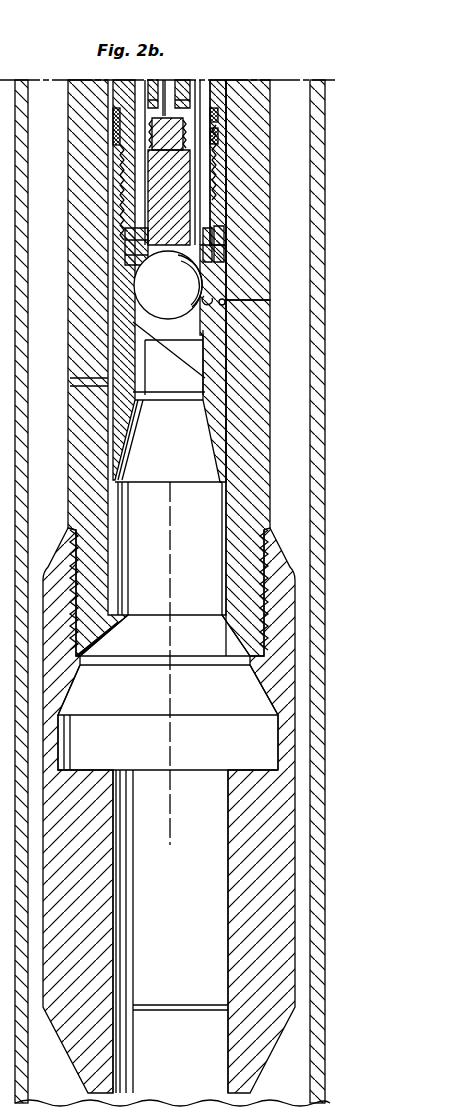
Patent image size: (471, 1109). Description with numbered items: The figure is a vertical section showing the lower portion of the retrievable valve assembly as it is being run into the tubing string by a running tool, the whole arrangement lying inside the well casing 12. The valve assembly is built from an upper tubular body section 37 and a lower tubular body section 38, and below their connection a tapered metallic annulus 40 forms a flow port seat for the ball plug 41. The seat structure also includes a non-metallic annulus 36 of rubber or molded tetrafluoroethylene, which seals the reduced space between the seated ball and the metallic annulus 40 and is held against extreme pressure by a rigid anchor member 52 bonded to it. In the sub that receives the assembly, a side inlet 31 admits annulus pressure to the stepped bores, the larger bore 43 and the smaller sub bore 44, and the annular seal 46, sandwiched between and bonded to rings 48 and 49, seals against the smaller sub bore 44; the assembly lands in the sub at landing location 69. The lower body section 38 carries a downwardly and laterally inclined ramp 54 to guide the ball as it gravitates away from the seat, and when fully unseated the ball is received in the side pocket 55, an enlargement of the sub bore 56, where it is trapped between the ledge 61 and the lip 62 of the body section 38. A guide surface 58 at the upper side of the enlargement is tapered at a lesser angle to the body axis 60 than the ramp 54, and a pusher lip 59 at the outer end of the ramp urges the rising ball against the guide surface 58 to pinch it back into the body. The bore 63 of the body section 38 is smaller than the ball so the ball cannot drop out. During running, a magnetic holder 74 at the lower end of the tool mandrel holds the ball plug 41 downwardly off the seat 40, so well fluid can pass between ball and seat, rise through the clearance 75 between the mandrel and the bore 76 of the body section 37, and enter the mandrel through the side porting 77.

The well casing 12 is at (309, 1023).
The side inlet 31 is at (226, 382).
The non-metallic annulus 36 is at (125, 238).
The upper tubular body section 37 is at (228, 200).
The lower tubular body section 38 is at (120, 303).
The metallic annulus 40 is at (207, 233).
The ball plug 41 is at (168, 285).
The larger stepped bore 43 is at (225, 302).
The smaller sub bore 44 is at (223, 497).
The annular seal 46 is at (226, 127).
The ring 48 is at (220, 120).
The ring 49 is at (222, 144).
The rigid anchor member 52 is at (230, 253).
The ramp 54 is at (203, 341).
The side pocket 55 is at (275, 734).
The sub bore 56 is at (228, 905).
The guide surface 58 is at (248, 675).
The pusher lip 59 is at (213, 368).
The body axis 60 is at (170, 822).
The ledge 61 is at (270, 772).
The lip 62 is at (212, 298).
The bore 63 is at (169, 365).
The landing location 69 is at (110, 212).
The magnetic holder 74 is at (214, 245).
The clearance 75 is at (197, 178).
The bore of body section 37 76 is at (138, 135).
The side porting 77 is at (185, 95).